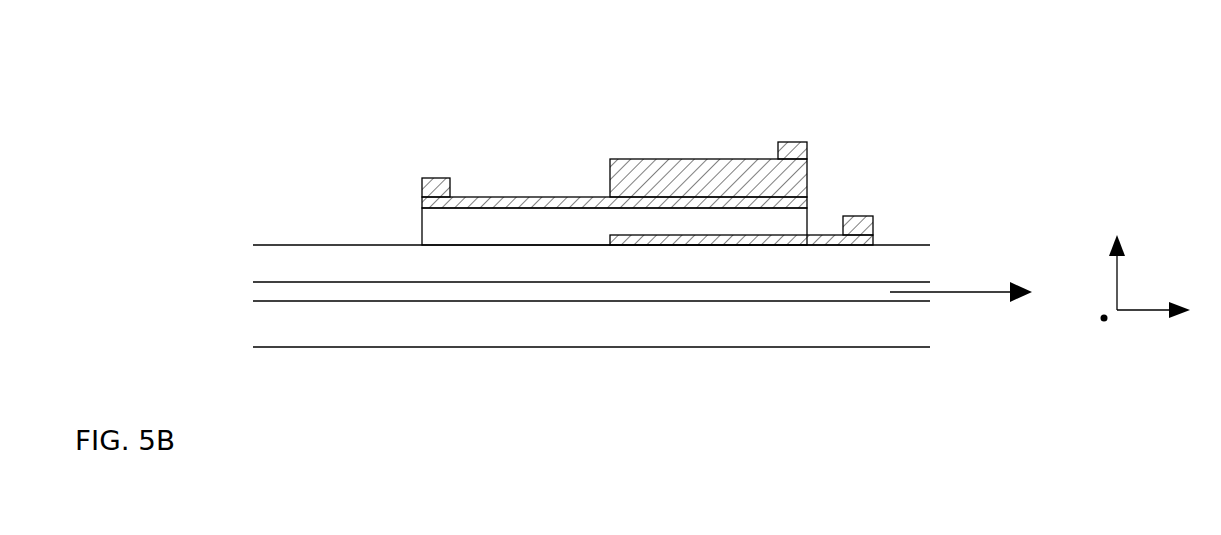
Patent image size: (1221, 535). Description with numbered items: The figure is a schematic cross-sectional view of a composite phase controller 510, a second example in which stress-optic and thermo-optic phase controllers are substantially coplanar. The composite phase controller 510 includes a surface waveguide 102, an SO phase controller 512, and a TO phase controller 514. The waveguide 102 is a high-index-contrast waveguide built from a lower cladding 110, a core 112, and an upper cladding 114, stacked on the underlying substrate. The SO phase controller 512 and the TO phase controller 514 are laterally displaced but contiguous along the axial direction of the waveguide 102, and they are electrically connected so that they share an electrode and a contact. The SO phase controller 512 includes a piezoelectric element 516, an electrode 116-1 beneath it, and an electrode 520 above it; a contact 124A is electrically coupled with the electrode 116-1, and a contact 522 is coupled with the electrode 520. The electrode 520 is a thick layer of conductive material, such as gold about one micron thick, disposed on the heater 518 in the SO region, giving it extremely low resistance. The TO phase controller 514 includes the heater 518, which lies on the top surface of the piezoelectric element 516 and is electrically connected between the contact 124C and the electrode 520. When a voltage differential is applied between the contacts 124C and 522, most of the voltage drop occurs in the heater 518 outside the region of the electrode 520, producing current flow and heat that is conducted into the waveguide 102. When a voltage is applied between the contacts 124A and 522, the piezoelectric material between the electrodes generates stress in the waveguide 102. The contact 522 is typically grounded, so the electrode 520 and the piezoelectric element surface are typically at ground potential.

The composite phase controller 510 is at (207, 85).
The waveguide 102 is at (237, 245).
The upper cladding 114 is at (323, 276).
The core 112 is at (337, 290).
The lower cladding 110 is at (323, 340).
The piezoelectric element 516 is at (442, 227).
The TO phase controller 514 is at (610, 141).
The heater 518 is at (516, 208).
The contact 124C is at (437, 178).
The SO phase controller 512 is at (807, 107).
The electrode 520 is at (808, 182).
The contact 522 is at (793, 142).
The electrode 116-1 is at (742, 245).
The contact 124A is at (873, 223).